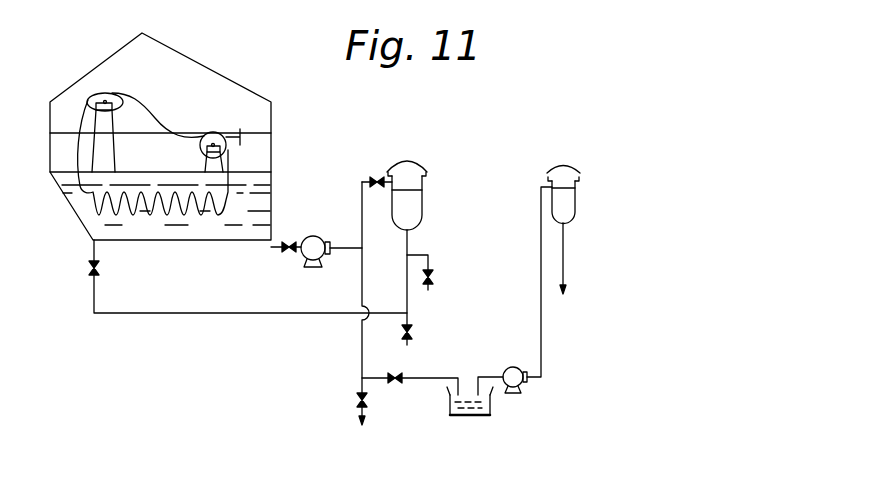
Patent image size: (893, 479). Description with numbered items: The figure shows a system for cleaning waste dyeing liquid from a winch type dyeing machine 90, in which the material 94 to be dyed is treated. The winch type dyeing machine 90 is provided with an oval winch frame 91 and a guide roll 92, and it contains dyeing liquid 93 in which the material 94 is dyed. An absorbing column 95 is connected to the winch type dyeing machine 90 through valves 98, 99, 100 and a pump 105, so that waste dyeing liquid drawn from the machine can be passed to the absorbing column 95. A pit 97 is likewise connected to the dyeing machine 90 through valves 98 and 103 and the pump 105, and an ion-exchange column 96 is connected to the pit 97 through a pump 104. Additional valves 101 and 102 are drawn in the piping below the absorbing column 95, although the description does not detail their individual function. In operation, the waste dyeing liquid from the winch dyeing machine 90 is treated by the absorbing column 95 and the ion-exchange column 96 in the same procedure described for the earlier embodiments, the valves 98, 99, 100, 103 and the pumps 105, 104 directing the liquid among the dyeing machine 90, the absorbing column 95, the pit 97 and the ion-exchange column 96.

The winch type dyeing machine 90 is at (182, 55).
The oval winch frame 91 is at (92, 94).
The guide roll 92 is at (218, 133).
The dyeing liquid 93 is at (85, 208).
The material 94 is at (155, 120).
The absorbing column 95 is at (408, 158).
The ion-exchange column 96 is at (565, 167).
The pit 97 is at (467, 416).
The valve 98 is at (293, 255).
The valve 99 is at (379, 177).
The valve 100 is at (101, 268).
The valve 101 is at (434, 278).
The valve 102 is at (409, 334).
The valve 103 is at (397, 382).
The pump 104 is at (364, 406).
The pump 105 is at (318, 237).